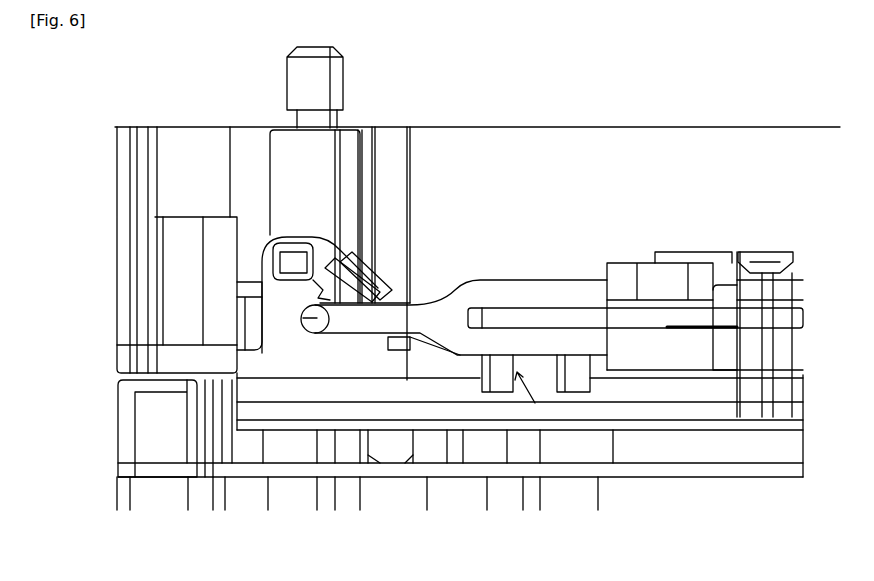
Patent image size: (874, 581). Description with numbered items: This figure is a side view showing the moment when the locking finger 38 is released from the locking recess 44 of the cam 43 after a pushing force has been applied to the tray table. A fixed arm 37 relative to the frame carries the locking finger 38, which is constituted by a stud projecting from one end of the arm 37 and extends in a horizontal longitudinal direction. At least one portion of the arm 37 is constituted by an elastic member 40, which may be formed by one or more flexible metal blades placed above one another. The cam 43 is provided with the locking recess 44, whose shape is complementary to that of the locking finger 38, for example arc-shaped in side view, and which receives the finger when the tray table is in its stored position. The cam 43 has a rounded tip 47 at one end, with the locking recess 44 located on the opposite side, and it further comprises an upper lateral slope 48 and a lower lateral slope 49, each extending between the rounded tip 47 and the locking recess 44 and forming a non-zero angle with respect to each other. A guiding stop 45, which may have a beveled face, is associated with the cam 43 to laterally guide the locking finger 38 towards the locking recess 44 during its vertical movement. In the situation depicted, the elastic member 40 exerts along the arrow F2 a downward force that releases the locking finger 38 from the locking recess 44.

The fixed arm 37 is at (527, 293).
The locking finger 38 is at (150, 345).
The elastic member 40 is at (618, 317).
The cam 43 is at (367, 278).
The locking recess 44 is at (292, 258).
The guiding stop 45 is at (277, 233).
The rounded tip 47 is at (392, 337).
The upper lateral slope 48 is at (410, 300).
The lower lateral slope 49 is at (385, 338).
The arrow F2 is at (298, 308).